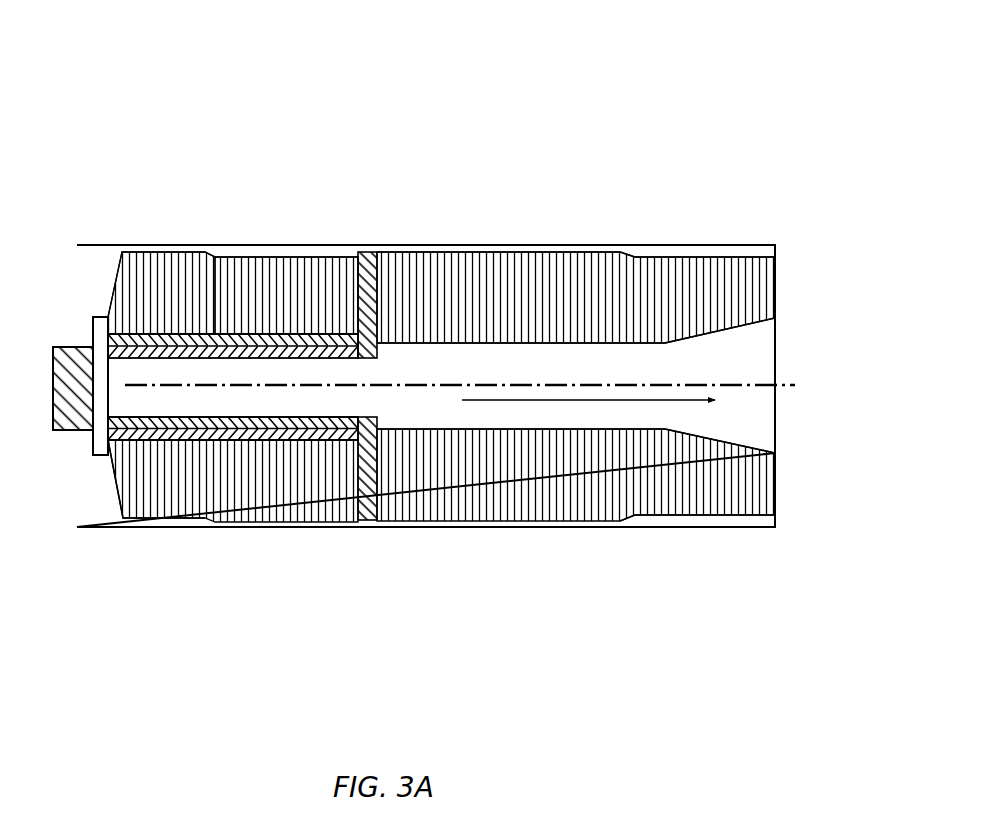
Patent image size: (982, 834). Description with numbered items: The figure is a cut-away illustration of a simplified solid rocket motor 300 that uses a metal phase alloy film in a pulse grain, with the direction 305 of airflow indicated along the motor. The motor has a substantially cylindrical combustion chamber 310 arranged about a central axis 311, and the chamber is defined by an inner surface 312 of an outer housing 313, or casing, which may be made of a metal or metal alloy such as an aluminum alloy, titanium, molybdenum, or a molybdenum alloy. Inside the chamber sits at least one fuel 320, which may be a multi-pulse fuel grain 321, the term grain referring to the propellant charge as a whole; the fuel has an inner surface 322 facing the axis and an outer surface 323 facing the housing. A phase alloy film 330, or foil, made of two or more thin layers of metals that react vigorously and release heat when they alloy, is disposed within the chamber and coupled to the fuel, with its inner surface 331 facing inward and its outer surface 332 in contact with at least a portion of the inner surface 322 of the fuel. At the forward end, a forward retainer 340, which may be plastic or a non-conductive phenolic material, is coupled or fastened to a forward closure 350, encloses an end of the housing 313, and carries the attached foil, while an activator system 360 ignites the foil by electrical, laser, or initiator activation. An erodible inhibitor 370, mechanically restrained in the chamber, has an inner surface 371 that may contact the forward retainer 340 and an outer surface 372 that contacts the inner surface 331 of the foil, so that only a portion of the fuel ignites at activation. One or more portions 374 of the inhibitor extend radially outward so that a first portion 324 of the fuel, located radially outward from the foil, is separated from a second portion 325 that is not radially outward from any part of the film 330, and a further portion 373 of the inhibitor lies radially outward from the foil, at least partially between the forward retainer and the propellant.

The solid rocket motor 300 is at (555, 97).
The direction of airflow 305 is at (540, 400).
The combustion chamber 310 is at (751, 357).
The central axis 311 is at (779, 388).
The inner surface of outer housing 312 is at (741, 262).
The outer housing 313 is at (662, 247).
The fuel 320 is at (313, 283).
The multi-pulse fuel grain 321 is at (285, 285).
The inner surface of fuel 322 is at (551, 343).
The outer surface of fuel 323 is at (572, 248).
The first portion of fuel source 324 is at (214, 285).
The second portion of fuel source 325 is at (408, 283).
The phase alloy film 330 is at (232, 438).
The inner surface of phase alloy film 331 is at (335, 417).
The outer surface of phase alloy film 332 is at (298, 440).
The forward retainer 340 is at (100, 316).
The forward closure 350 is at (88, 245).
The activator system 360 is at (60, 432).
The erodible inhibitor 370 is at (376, 458).
The inner surface of inhibitor 371 is at (225, 417).
The outer surface of inhibitor 372 is at (168, 442).
The portion of inhibitor 373 is at (105, 445).
The radially outward extending portion of inhibitor 374 is at (377, 493).